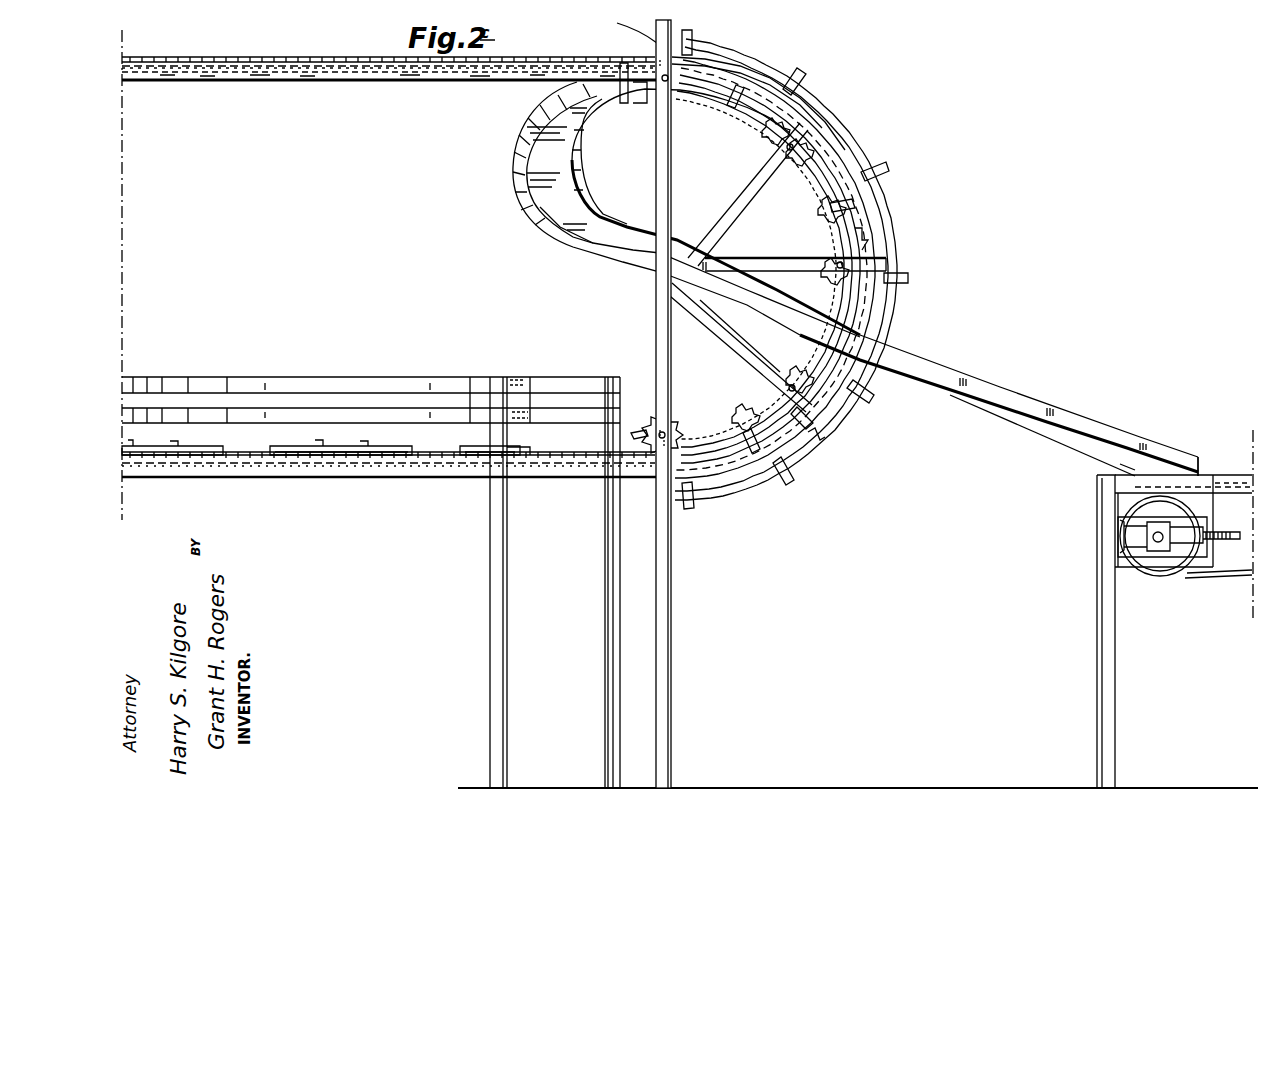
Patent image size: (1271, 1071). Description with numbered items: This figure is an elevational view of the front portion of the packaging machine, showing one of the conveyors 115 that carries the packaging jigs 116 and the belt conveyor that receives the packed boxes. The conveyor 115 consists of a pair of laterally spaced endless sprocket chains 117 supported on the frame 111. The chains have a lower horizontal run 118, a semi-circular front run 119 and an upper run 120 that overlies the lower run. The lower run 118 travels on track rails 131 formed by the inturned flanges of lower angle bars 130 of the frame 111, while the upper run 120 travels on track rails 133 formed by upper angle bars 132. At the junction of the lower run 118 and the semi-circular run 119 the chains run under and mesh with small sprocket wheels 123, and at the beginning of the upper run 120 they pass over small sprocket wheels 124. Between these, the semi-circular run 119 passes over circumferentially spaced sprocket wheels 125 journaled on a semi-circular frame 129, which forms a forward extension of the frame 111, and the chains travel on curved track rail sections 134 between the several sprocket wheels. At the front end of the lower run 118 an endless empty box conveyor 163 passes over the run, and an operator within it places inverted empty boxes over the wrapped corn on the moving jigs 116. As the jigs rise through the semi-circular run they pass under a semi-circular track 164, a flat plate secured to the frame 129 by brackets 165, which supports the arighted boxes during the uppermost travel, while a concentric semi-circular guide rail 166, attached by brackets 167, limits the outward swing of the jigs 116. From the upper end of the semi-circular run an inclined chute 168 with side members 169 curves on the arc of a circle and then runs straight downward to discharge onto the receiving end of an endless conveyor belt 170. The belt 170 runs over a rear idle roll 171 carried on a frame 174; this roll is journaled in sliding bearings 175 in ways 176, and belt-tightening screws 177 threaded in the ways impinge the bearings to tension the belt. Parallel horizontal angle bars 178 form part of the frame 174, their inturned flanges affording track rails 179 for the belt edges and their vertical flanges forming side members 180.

The frame 111 is at (656, 324).
The conveyor 115 is at (261, 56).
The packaging jig 116 is at (418, 86).
The sprocket chain 117 is at (206, 50).
The lower horizontal run 118 is at (326, 441).
The semi-circular front run 119 is at (762, 256).
The upper run 120 is at (388, 53).
The small sprocket wheel 123 is at (712, 402).
The small sprocket wheel 124 is at (648, 88).
The circumferentially spaced sprocket wheel 125 is at (780, 152).
The semi-circular frame 129 is at (868, 222).
The lower angle bar 130 is at (299, 484).
The track rail 131 is at (372, 464).
The upper angle bar 132 is at (316, 88).
The track rail 133 is at (238, 70).
The curved track rail section 134 is at (830, 177).
The endless empty box conveyor 163 is at (410, 376).
The semi-circular track 164 is at (837, 241).
The bracket 165 is at (830, 205).
The semi-circular guide rail 166 is at (892, 255).
The bracket 167 is at (906, 281).
The inclined chute 168 is at (508, 163).
The side member 169 is at (610, 213).
The endless conveyor belt 170 is at (1206, 583).
The rear idle roll 171 is at (1163, 576).
The frame 174 is at (1115, 520).
The sliding bearing 175 is at (1150, 546).
The way 176 is at (1136, 534).
The belt-tightening screw 177 is at (1238, 524).
The horizontal angle bar 178 is at (1120, 476).
The track rail 179 is at (1224, 490).
The side member 180 is at (1175, 478).